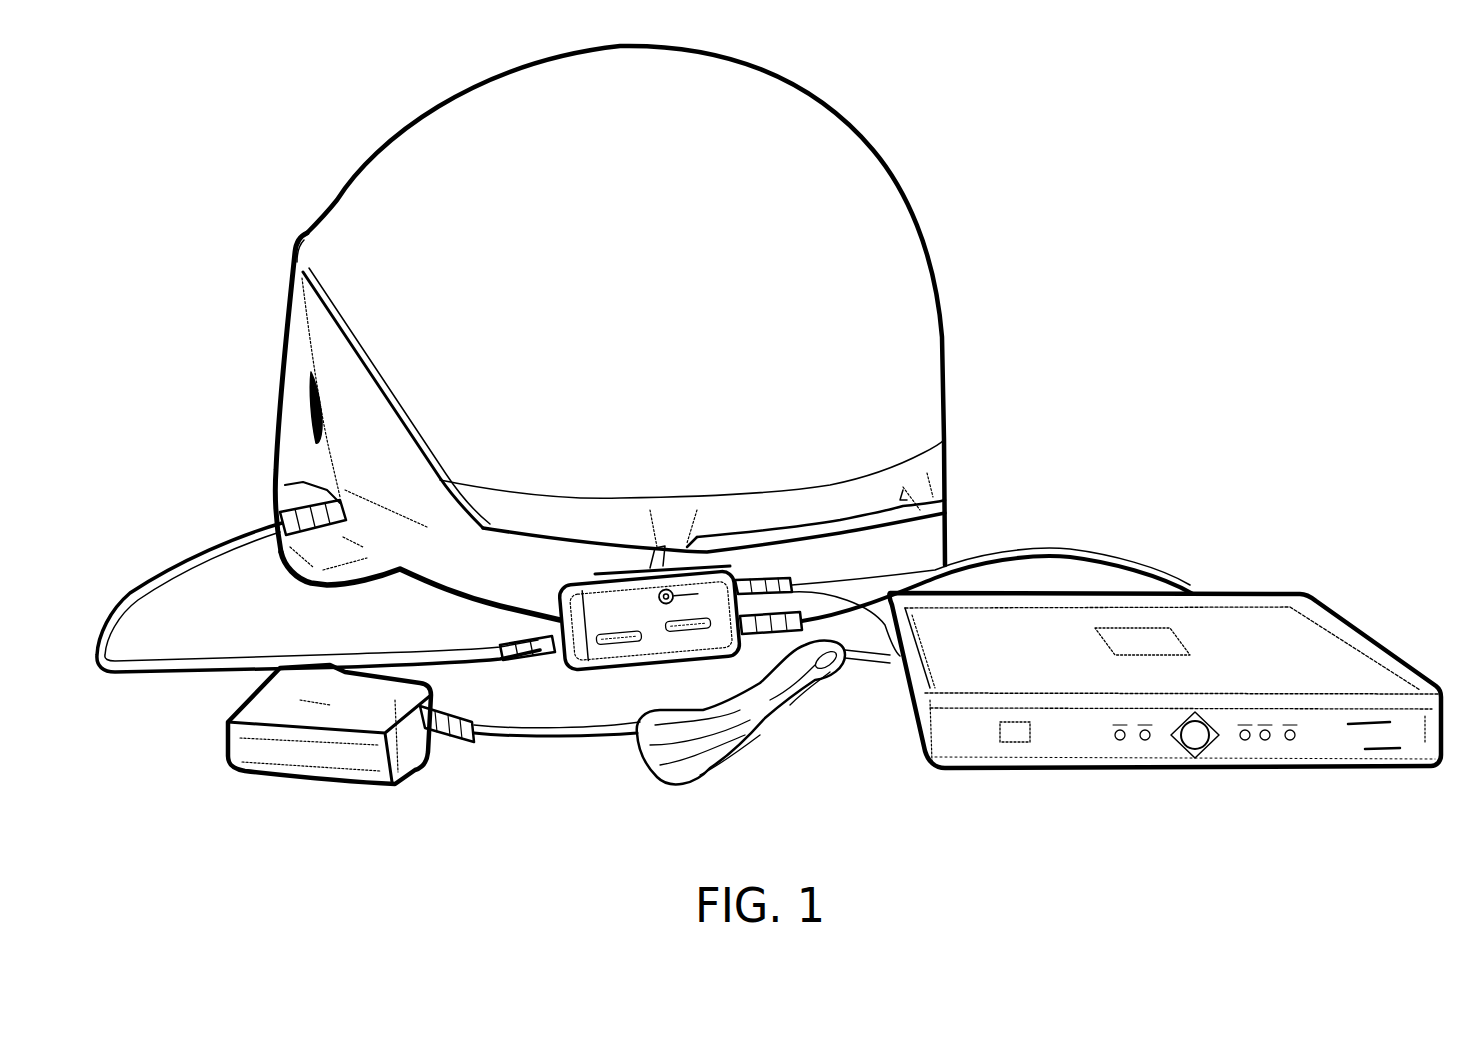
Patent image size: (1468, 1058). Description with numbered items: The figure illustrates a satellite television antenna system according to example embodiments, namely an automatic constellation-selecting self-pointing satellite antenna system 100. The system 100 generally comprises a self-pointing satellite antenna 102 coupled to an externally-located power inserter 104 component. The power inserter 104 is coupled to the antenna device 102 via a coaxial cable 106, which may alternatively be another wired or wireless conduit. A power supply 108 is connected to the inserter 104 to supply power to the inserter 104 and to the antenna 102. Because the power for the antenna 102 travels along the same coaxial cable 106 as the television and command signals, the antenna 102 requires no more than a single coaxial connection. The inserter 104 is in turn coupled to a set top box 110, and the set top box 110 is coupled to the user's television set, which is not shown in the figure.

The automatic constellation-selecting self-pointing satellite antenna system 100 is at (1043, 313).
The self-pointing satellite antenna 102 is at (447, 172).
The power inserter 104 is at (647, 640).
The coaxial cable 106 is at (150, 672).
The power supply 108 is at (328, 782).
The set top box 110 is at (1282, 768).